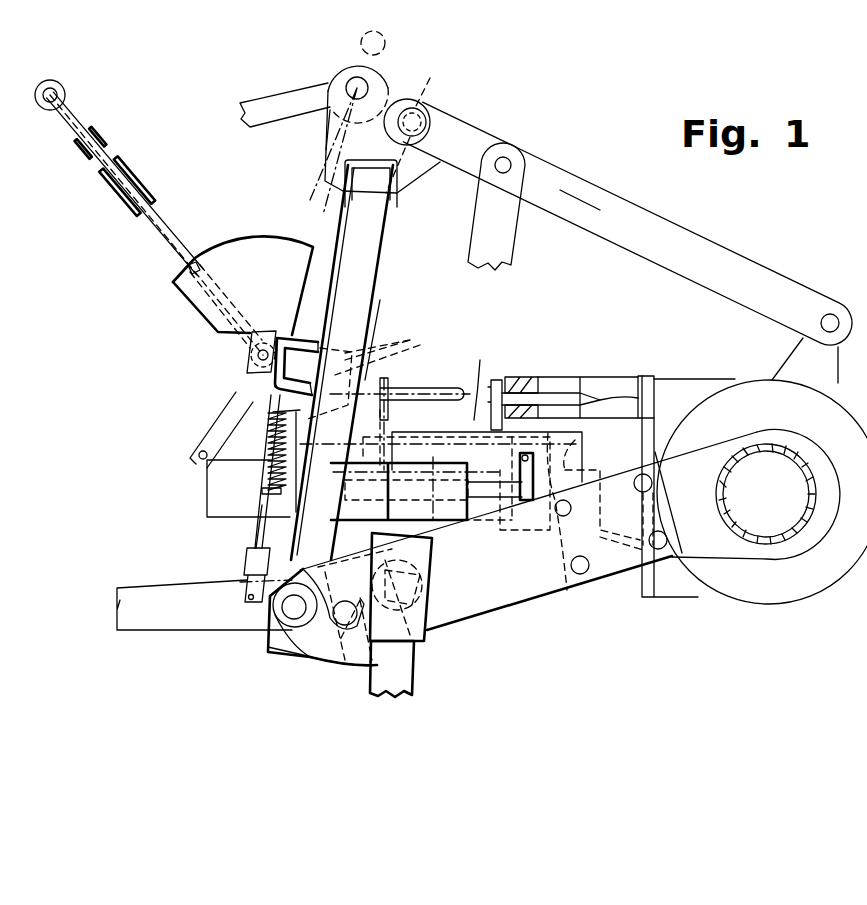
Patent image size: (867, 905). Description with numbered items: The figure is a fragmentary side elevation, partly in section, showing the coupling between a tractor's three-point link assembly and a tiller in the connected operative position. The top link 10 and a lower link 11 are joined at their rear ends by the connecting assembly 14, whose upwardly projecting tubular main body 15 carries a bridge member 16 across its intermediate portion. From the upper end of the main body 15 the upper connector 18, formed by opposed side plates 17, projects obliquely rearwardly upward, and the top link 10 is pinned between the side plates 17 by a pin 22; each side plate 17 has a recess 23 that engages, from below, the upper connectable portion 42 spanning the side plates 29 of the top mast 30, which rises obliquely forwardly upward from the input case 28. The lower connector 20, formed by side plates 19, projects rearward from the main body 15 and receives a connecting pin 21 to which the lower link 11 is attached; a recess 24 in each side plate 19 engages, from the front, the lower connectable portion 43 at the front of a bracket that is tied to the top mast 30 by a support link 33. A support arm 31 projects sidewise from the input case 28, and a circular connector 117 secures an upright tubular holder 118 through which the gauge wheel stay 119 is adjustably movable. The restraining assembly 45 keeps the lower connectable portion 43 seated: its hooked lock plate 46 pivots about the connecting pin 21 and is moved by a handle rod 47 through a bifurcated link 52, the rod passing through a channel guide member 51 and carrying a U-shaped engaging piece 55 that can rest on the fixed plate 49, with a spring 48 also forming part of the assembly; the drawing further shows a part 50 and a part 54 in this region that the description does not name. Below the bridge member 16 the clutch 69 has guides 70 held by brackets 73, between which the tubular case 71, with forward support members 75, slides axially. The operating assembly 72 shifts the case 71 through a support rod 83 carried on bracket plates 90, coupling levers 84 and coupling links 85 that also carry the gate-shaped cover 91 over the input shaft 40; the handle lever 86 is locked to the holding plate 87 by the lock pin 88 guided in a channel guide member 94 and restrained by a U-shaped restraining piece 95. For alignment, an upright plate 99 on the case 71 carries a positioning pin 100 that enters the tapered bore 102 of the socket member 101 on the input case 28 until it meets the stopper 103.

The top link 10 is at (262, 135).
The lower link 11 is at (140, 628).
The connecting assembly 14 is at (398, 302).
The main body 15 is at (388, 236).
The bridge member 16 is at (363, 372).
The side plate 17 is at (407, 176).
The upper connector 18 is at (320, 151).
The side plate 19 is at (268, 636).
The lower connector 20 is at (280, 660).
The connecting pin 21 is at (282, 607).
The pin 22 is at (354, 84).
The recess 23 is at (415, 126).
The recess 24 is at (355, 660).
The input case 28 is at (670, 375).
The side plate 29 is at (582, 190).
The top mast 30 is at (566, 152).
The support arm 31 is at (762, 448).
The support link 33 is at (508, 238).
The input shaft 40 is at (575, 446).
The upper connectable portion 42 is at (430, 118).
The lower connectable portion 43 is at (343, 603).
The restraining assembly 45 is at (244, 529).
The lock plate 46 is at (320, 655).
The handle rod 47 is at (252, 540).
The spring 48 is at (272, 438).
The fixed plate 49 is at (377, 344).
The cam disc 50 is at (420, 597).
The guide member 51 is at (260, 495).
The bifurcated link 52 is at (243, 576).
The spring 54 is at (263, 487).
The engaging piece 55 is at (300, 340).
The clutch 69 is at (477, 377).
The guide 70 is at (440, 517).
The tubular case 71 is at (522, 505).
The operating assembly 72 is at (173, 308).
The bracket 73 is at (390, 380).
The support member 75 is at (482, 500).
The support rod 83 is at (250, 355).
The coupling lever 84 is at (270, 407).
The coupling link 85 is at (380, 455).
The handle lever 86 is at (68, 108).
The holding plate 87 is at (258, 252).
The lock pin 88 is at (178, 240).
The bracket plate 90 is at (273, 338).
The cover 91 is at (585, 482).
The guide member 94 is at (130, 185).
The restraining piece 95 is at (108, 140).
The upright plate 99 is at (497, 380).
The positioning pin 100 is at (572, 393).
The socket member 101 is at (632, 372).
The bore 102 is at (520, 378).
The stopper 103 is at (656, 400).
The circular connector 117 is at (378, 545).
The holder 118 is at (430, 640).
The stay 119 is at (414, 668).